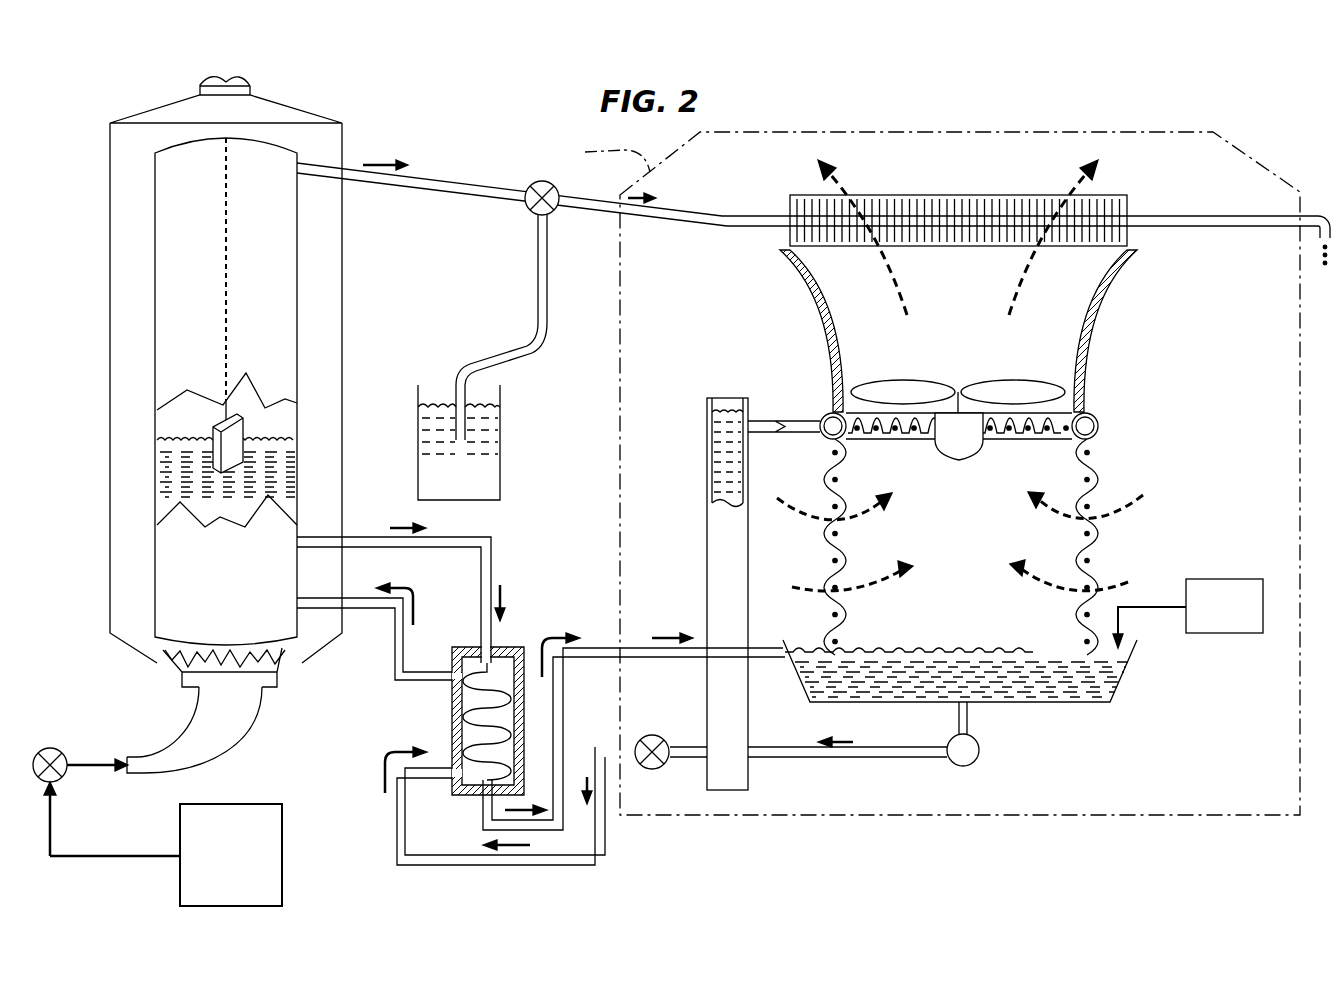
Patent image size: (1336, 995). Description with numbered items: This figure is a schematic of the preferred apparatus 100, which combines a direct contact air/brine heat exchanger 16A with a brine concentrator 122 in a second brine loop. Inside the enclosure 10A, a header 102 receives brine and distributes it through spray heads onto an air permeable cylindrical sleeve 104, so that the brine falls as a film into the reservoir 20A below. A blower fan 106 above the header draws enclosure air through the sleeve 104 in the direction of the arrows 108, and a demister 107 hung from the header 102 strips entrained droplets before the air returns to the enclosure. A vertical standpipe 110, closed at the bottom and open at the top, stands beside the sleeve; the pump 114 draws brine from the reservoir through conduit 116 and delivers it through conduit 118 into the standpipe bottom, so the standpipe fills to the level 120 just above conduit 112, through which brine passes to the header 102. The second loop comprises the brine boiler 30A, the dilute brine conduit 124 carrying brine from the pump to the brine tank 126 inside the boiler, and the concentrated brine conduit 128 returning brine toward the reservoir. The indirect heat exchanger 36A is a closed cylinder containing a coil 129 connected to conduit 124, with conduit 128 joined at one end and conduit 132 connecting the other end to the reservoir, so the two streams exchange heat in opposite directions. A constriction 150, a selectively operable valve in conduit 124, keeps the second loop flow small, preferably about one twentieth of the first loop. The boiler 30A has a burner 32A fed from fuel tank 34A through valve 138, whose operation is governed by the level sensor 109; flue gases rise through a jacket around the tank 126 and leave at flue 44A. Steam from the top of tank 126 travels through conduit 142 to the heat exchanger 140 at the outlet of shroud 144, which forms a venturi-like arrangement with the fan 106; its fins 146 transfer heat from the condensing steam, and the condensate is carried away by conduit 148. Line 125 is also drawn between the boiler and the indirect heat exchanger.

The enclosure 10A is at (1114, 132).
The apparatus 100 is at (171, 491).
The brine boiler 30A is at (110, 340).
The flue 44A is at (252, 88).
The brine concentrator 122 is at (98, 503).
The brine tank 126 is at (155, 588).
The burner 32A is at (237, 702).
The fuel tank 34A is at (263, 804).
The valve 138 is at (50, 748).
The conduit 142 is at (437, 191).
The heat exchanger 140 is at (942, 233).
The fins 146 is at (813, 207).
The conduit 148 is at (1196, 215).
The shroud 144 is at (813, 322).
The blower fan 106 is at (1012, 378).
The header 102 is at (1098, 420).
The air permeable cylindrical sleeve 104 is at (997, 529).
The arrows 108 is at (856, 586).
The demister 107 is at (1022, 441).
The direct contact air/brine heat exchanger 16A is at (1122, 478).
The vertical standpipe 110 is at (706, 594).
The brine level in standpipe 120 is at (725, 468).
The conduit 112 is at (760, 420).
The reservoir 20A is at (1125, 673).
The level sensor 109 is at (1226, 579).
The pump 114 is at (935, 751).
The conduit 116 is at (955, 718).
The conduit 118 is at (790, 758).
The constriction 150 is at (652, 735).
The indirect heat exchanger 36A is at (461, 697).
The coil 129 is at (461, 725).
The concentrated brine conduit 128 is at (492, 560).
The return line 125 is at (413, 680).
The dilute brine conduit 124 is at (575, 866).
The conduit 132 is at (636, 648).